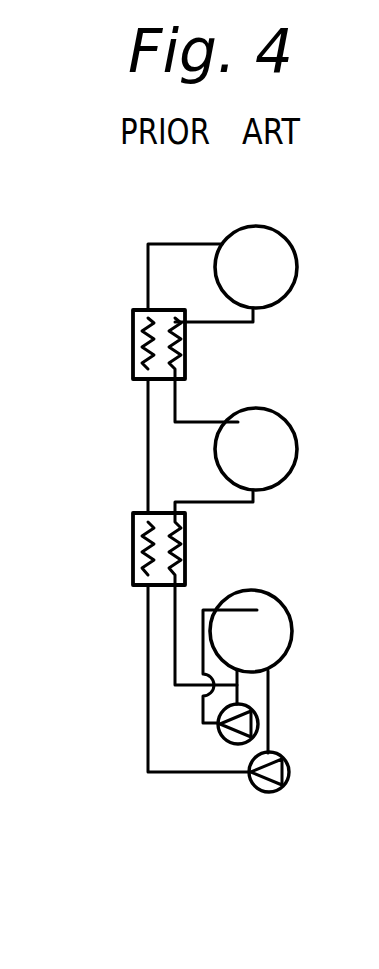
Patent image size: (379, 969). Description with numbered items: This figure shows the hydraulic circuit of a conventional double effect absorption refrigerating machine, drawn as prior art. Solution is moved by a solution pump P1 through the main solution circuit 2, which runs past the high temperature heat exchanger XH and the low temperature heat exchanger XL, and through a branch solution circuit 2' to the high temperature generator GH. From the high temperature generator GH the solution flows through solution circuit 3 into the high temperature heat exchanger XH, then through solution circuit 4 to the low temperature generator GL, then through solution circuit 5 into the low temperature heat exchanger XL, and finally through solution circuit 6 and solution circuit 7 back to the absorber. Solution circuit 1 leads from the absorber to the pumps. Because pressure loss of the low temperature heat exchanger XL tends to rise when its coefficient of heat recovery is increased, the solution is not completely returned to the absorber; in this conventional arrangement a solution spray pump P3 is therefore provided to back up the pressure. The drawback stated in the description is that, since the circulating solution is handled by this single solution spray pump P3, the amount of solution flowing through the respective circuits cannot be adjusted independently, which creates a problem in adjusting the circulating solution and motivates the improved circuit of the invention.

The solution circuit 1 is at (270, 718).
The solution circuit 2 is at (167, 575).
The solution circuit 2' is at (150, 271).
The solution circuit 3 is at (237, 325).
The solution circuit 4 is at (190, 422).
The solution circuit 5 is at (237, 504).
The solution circuit 6 is at (180, 597).
The solution circuit 7 is at (210, 611).
The high temperature generator GH is at (256, 267).
The low temperature generator GL is at (256, 449).
The high temperature heat exchanger XH is at (133, 353).
The low temperature heat exchanger XL is at (132, 554).
The solution pump P1 is at (290, 773).
The solution spray pump P3 is at (223, 738).